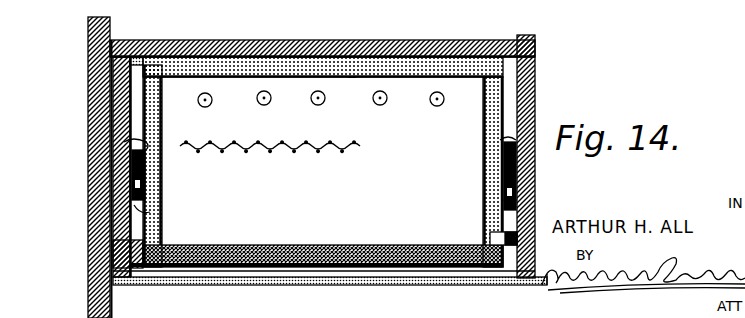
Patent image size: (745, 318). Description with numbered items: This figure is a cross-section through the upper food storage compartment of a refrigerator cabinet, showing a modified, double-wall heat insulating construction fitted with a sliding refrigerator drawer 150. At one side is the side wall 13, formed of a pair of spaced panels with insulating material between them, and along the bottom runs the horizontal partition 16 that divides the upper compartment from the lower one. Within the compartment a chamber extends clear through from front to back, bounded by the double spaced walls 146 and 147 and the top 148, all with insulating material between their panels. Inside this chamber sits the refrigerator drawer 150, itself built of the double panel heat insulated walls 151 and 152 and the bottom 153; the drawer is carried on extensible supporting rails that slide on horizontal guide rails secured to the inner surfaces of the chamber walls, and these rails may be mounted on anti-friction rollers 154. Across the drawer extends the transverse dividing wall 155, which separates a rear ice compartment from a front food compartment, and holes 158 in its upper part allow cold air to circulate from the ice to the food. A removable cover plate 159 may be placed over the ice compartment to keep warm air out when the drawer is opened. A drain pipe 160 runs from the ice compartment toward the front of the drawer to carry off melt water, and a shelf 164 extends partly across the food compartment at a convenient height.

The side wall 13 is at (88, 40).
The horizontal partition 16 is at (385, 280).
The double spaced wall 146 is at (578, 85).
The double spaced wall 147 is at (113, 105).
The top 148 is at (288, 41).
The refrigerator drawer 150 is at (323, 128).
The double panel heat insulated wall 151 is at (162, 115).
The double panel heat insulated wall 152 is at (483, 122).
The bottom 153 is at (333, 233).
The anti-friction rollers 154 is at (163, 167).
The dividing wall 155 is at (395, 217).
The holes 158 is at (316, 105).
The removable cover plate 159 is at (352, 78).
The drain pipe 160 is at (492, 237).
The shelf 164 is at (320, 158).